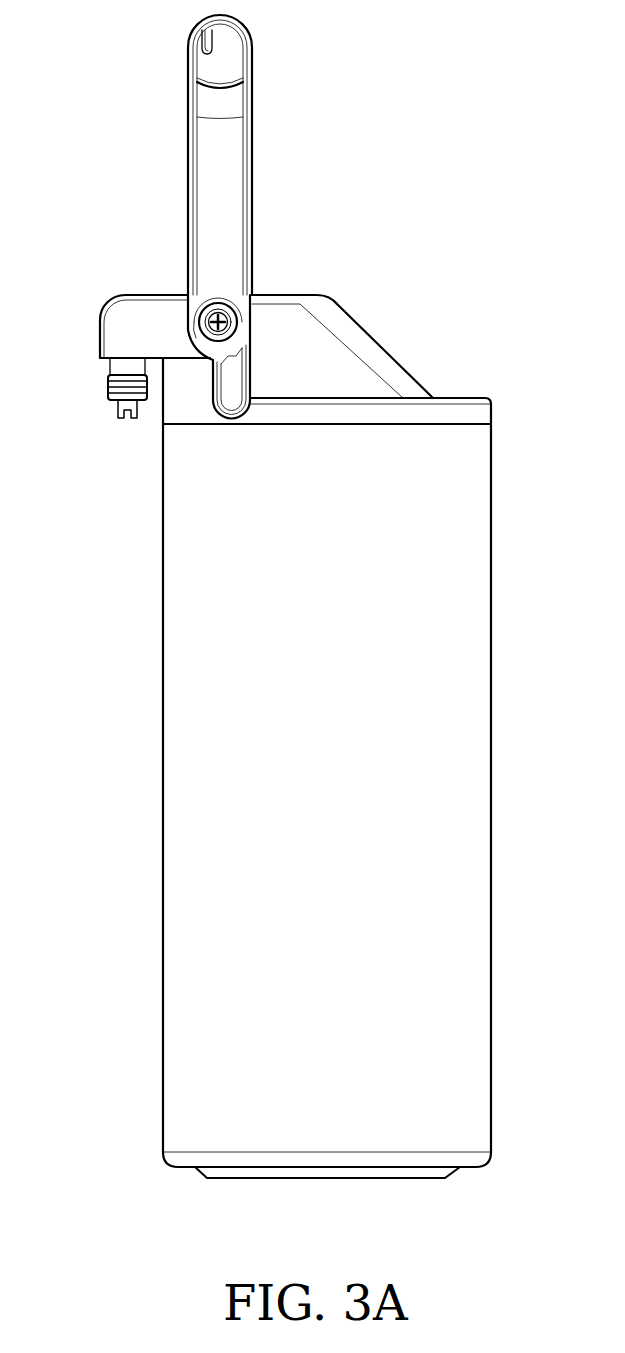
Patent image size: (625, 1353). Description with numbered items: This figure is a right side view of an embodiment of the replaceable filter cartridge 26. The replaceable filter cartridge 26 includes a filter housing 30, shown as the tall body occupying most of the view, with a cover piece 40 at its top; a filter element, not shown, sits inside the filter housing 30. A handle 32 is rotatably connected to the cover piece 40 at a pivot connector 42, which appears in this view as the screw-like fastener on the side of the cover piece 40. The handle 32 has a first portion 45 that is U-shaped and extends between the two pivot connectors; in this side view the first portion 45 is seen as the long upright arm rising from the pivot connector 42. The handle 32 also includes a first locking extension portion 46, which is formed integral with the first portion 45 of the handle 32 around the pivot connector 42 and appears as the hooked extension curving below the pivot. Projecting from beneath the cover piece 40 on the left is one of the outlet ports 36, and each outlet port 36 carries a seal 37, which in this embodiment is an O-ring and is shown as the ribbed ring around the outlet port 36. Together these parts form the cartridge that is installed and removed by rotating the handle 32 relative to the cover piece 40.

The replaceable filter cartridge 26 is at (145, 249).
The filter housing 30 is at (205, 842).
The handle 32 is at (188, 188).
The outlet port 36 is at (120, 420).
The seal 37 is at (108, 394).
The cover piece 40 is at (100, 337).
The pivot connector 42 is at (203, 312).
The first portion 45 is at (197, 28).
The first locking extension portion 46 is at (214, 405).